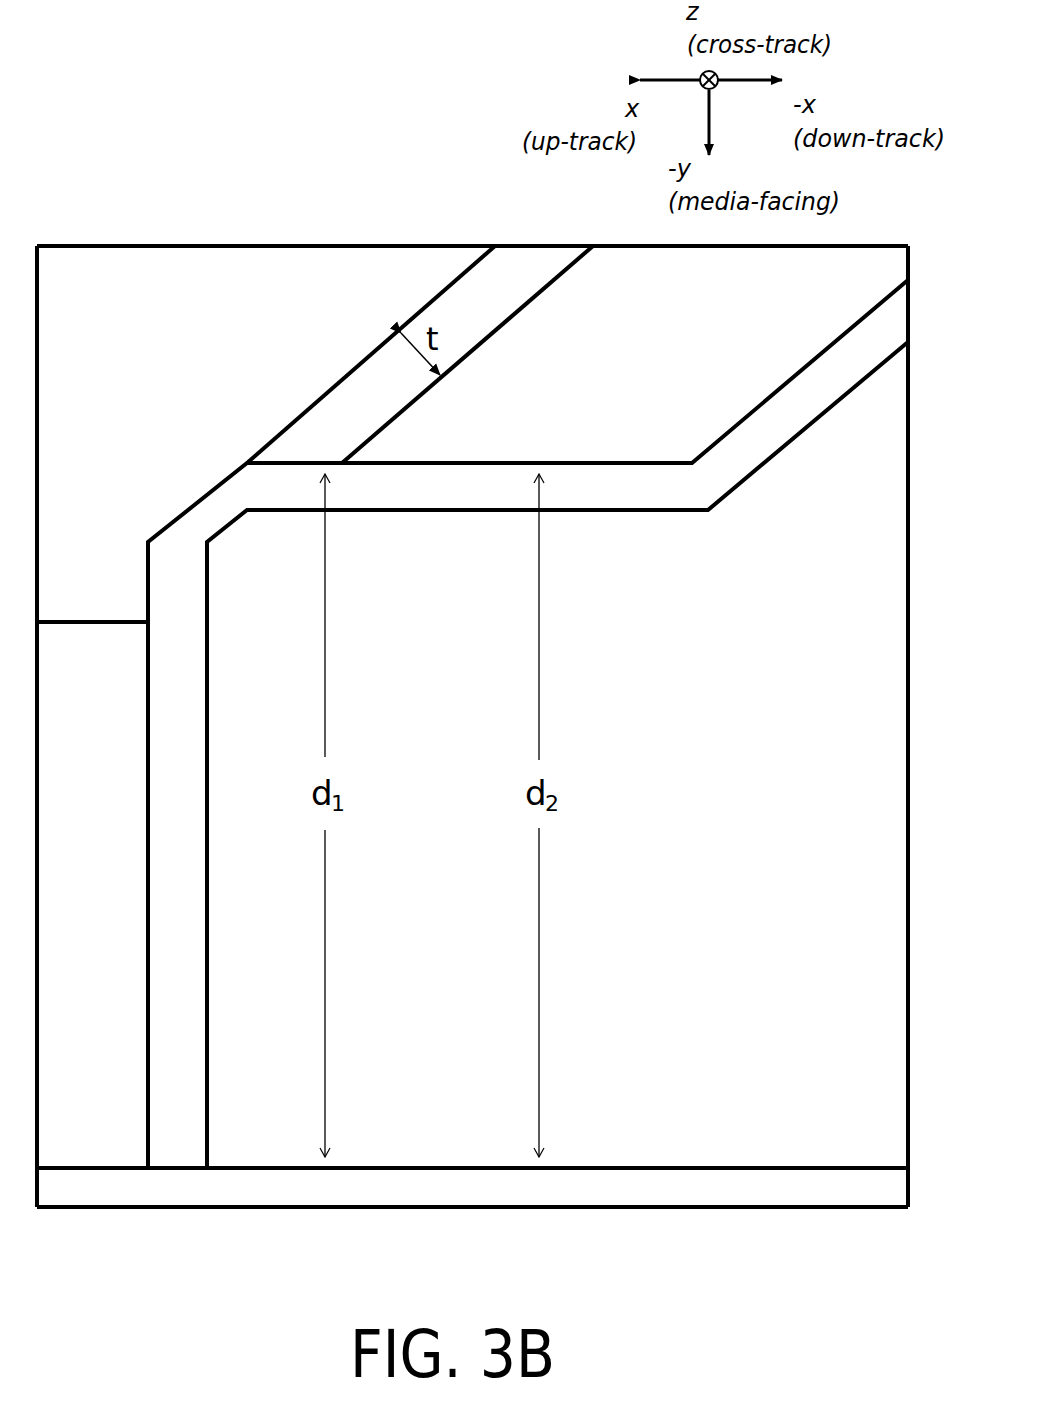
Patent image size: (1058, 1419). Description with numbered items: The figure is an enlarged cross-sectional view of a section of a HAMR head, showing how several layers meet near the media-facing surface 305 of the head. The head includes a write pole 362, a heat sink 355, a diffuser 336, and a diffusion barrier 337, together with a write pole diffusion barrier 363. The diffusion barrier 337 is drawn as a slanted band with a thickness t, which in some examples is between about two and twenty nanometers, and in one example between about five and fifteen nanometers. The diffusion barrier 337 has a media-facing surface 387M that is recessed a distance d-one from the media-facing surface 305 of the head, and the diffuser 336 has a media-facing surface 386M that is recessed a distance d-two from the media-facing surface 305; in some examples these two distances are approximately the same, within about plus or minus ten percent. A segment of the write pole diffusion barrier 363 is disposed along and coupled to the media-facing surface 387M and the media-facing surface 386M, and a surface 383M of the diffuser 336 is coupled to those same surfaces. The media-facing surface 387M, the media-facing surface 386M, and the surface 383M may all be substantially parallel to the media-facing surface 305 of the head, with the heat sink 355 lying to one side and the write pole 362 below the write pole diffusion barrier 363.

The media-facing surface 305 is at (442, 1168).
The diffuser 336 is at (745, 323).
The diffusion barrier 337 is at (391, 416).
The heat sink 355 is at (180, 409).
The write pole 362 is at (749, 939).
The write pole diffusion barrier 363 is at (652, 507).
The surface of diffuser 383M is at (430, 476).
The media-facing surface of diffuser 386M is at (583, 452).
The media-facing surface of diffusion barrier 387M is at (298, 452).